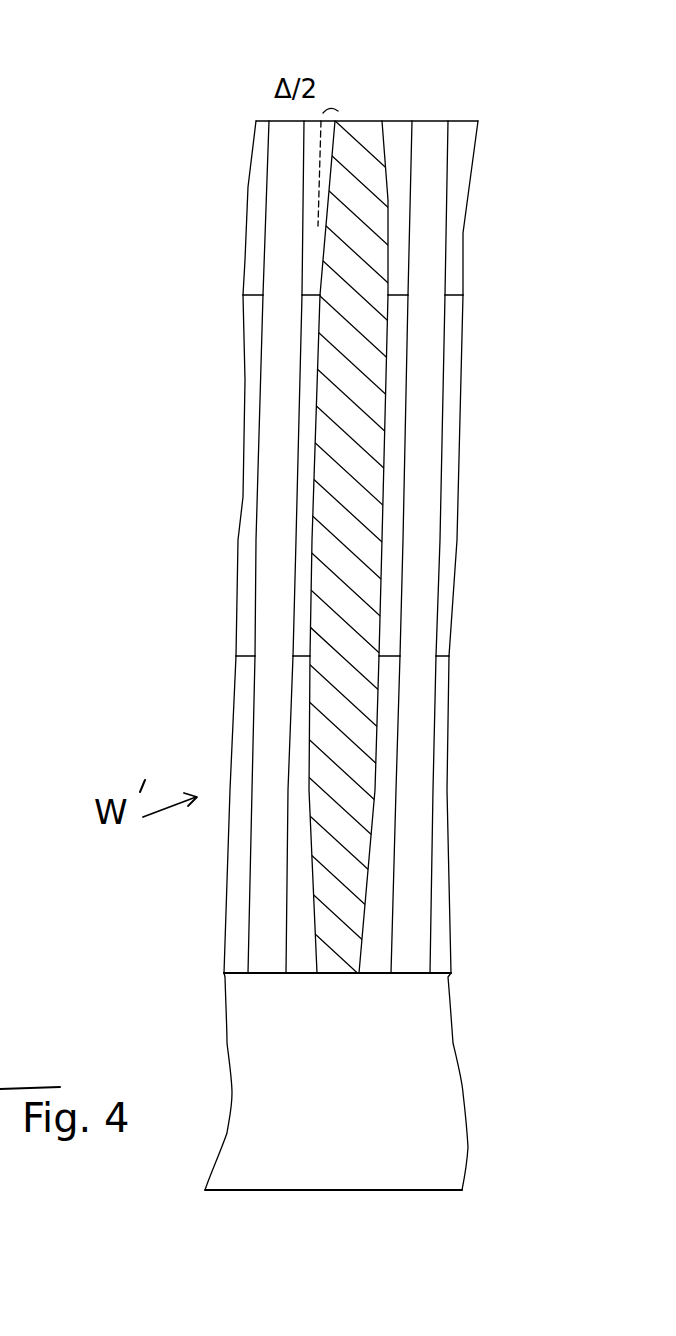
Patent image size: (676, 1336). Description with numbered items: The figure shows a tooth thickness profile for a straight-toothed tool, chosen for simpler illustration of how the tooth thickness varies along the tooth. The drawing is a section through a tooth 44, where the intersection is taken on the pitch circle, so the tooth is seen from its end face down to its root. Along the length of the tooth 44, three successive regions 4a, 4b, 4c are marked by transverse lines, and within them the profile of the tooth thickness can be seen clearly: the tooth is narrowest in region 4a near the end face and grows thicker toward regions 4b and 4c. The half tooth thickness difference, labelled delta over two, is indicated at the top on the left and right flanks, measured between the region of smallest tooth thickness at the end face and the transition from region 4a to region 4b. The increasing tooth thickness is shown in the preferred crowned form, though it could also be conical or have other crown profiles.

The region 4a is at (404, 229).
The region 4b is at (393, 456).
The region 4c is at (386, 796).
The tooth 44 is at (336, 985).